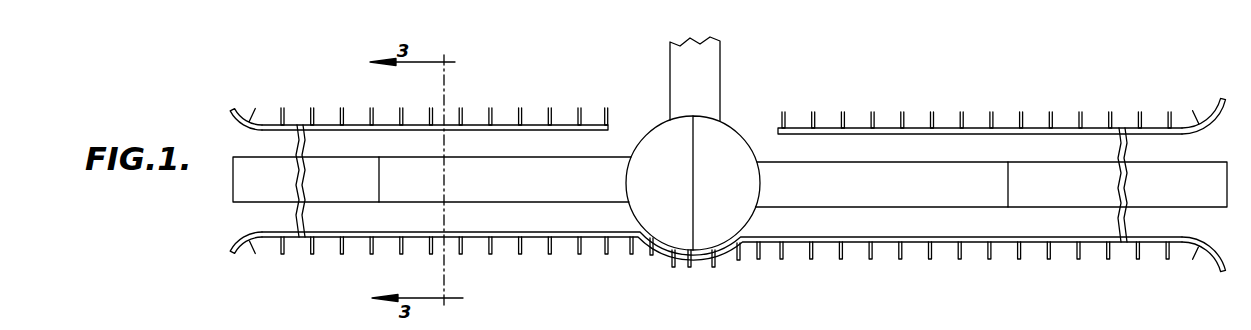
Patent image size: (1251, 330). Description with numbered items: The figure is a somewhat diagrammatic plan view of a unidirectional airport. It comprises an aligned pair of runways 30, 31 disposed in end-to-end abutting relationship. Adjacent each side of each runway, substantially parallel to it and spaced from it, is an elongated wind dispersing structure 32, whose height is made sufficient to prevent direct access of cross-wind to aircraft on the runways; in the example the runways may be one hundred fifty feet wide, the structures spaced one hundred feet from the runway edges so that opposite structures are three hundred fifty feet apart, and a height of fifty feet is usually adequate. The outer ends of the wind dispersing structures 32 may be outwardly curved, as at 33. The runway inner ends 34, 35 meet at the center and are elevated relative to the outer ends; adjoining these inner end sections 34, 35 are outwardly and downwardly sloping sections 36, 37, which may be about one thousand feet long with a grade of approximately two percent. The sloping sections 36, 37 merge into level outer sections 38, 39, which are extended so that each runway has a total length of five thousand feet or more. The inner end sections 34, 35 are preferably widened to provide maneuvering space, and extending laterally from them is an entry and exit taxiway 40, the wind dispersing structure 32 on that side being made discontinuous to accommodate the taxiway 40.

The runway 30 is at (432, 181).
The runway 31 is at (992, 183).
The wind dispersing structure 32 is at (507, 125).
The outwardly curved outer end 33 is at (250, 112).
The runway inner end section 34 is at (636, 160).
The runway inner end section 35 is at (755, 162).
The sloping section 36 is at (509, 166).
The sloping section 37 is at (868, 167).
The level outer section 38 is at (338, 166).
The level outer section 39 is at (1060, 167).
The entry and exit taxiway 40 is at (718, 108).